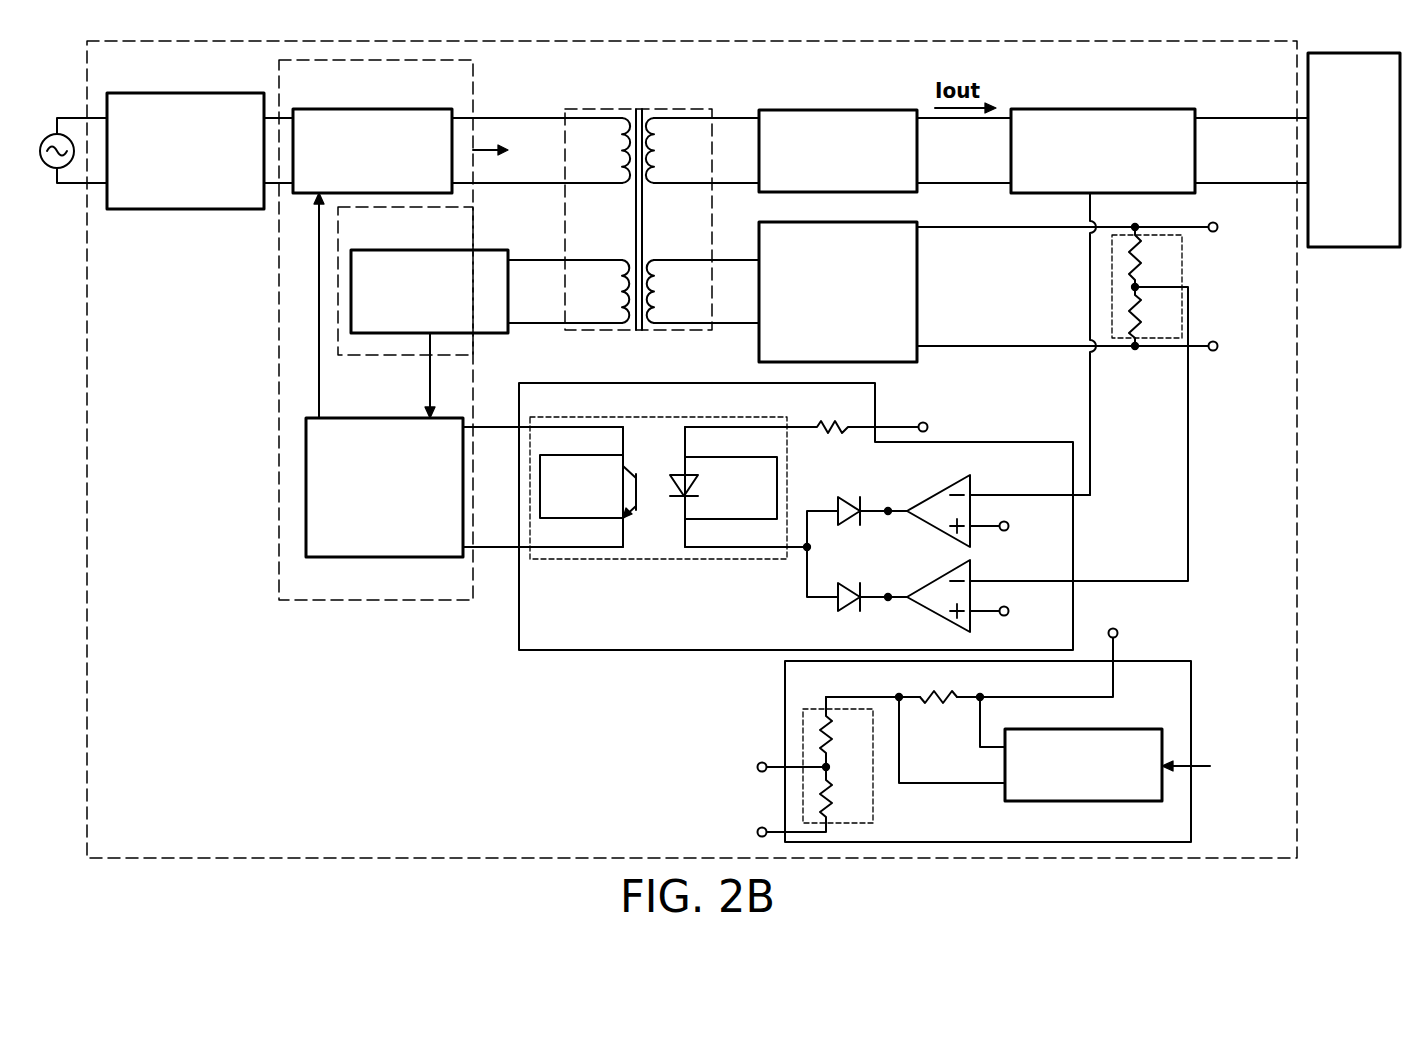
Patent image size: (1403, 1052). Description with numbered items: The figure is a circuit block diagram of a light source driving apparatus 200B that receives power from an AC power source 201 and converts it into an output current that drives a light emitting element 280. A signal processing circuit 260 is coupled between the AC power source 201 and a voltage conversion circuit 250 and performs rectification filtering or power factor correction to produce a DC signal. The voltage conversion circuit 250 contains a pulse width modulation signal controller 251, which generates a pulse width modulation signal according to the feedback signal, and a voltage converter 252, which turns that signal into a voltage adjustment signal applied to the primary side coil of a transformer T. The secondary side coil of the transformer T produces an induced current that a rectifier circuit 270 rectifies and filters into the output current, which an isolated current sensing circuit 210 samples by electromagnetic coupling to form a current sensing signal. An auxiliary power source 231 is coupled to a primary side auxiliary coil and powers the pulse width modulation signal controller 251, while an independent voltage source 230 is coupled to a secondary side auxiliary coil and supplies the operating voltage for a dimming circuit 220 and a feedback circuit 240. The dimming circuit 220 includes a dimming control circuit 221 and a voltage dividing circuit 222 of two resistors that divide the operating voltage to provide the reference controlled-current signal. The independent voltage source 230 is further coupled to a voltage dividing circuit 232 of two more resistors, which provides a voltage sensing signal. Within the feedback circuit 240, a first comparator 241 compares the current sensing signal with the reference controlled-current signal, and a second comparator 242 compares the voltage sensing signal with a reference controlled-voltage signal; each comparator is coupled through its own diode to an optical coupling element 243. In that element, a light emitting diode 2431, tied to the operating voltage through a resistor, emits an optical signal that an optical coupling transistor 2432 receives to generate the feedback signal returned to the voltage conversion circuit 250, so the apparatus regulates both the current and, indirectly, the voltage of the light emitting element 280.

The light source driving apparatus 200B is at (1297, 397).
The AC power source 201 is at (48, 136).
The signal processing circuit 260 is at (187, 93).
The voltage conversion circuit 250 is at (376, 600).
The voltage converter 252 is at (373, 109).
The auxiliary power source 231 is at (430, 250).
The pulse width modulation signal controller 251 is at (385, 557).
The transformer T is at (660, 107).
The rectifier circuit 270 is at (840, 109).
The isolated current sensing circuit 210 is at (1060, 109).
The light emitting element 280 is at (1338, 53).
The independent voltage source 230 is at (917, 292).
The voltage dividing circuit 232 is at (1183, 268).
The feedback circuit 240 is at (1017, 442).
The first comparator 241 is at (935, 491).
The second comparator 242 is at (935, 578).
The optical coupling element 243 is at (658, 507).
The light emitting diode 2431 is at (700, 491).
The optical coupling transistor 2432 is at (618, 487).
The dimming circuit 220 is at (1163, 661).
The dimming control circuit 221 is at (1122, 729).
The voltage dividing circuit 222 is at (874, 812).